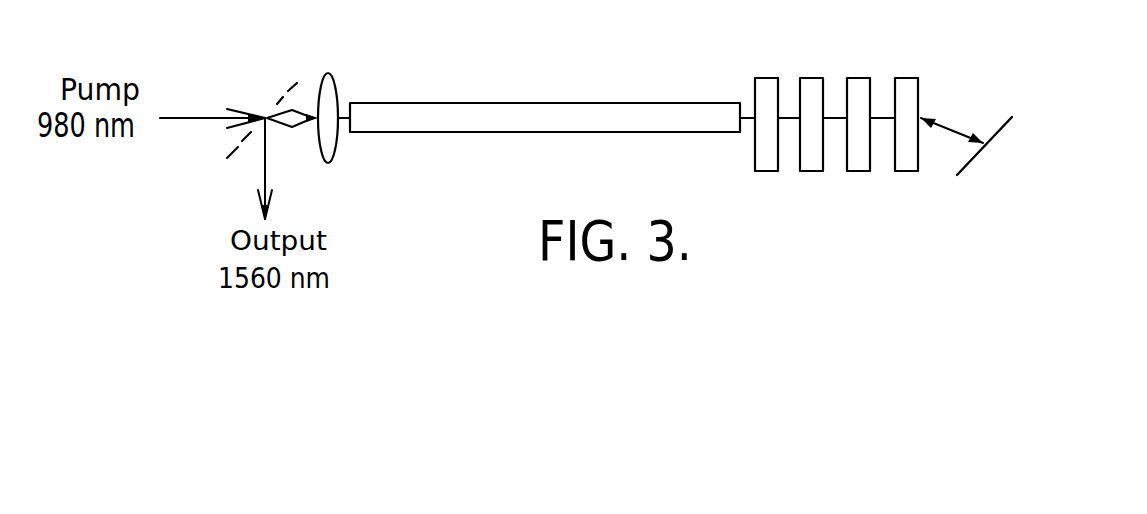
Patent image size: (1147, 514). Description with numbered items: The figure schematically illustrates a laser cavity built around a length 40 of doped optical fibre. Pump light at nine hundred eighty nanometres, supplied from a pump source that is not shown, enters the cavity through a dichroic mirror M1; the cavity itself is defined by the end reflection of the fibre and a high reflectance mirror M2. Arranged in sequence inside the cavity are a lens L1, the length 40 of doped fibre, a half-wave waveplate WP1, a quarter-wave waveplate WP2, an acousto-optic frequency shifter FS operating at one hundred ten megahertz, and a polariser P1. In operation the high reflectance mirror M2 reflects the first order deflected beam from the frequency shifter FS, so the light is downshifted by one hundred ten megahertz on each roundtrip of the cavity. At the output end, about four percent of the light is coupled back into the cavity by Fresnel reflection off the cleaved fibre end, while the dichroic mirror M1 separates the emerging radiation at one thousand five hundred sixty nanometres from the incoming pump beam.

The dichroic mirror M1 is at (283, 98).
The lens L1 is at (334, 74).
The length of doped optical fibre 40 is at (556, 103).
The λ/2 waveplate WP1 is at (768, 78).
The λ/4 waveplate WP2 is at (810, 78).
The acousto-optic frequency shifter FS is at (862, 78).
The polariser P1 is at (918, 85).
The high reflectance mirror M2 is at (1003, 127).